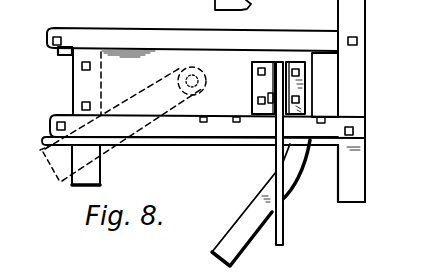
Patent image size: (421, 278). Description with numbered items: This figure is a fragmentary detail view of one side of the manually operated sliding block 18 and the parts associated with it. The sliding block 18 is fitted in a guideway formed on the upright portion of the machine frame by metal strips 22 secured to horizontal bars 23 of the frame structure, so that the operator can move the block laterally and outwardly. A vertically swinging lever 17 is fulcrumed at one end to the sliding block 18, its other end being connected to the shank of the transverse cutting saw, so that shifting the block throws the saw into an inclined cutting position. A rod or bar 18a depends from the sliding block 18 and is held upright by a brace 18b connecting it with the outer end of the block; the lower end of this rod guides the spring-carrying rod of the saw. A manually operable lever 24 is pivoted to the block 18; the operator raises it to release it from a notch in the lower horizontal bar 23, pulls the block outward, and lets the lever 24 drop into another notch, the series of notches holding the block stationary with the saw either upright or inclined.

The vertically swinging lever 17 is at (60, 166).
The slidable block 18 is at (209, 77).
The rod or bar 18a is at (105, 167).
The brace 18b is at (250, 205).
The metal strips 22 is at (66, 56).
The horizontal bars 23 is at (70, 38).
The manually operable lever 24 is at (284, 217).